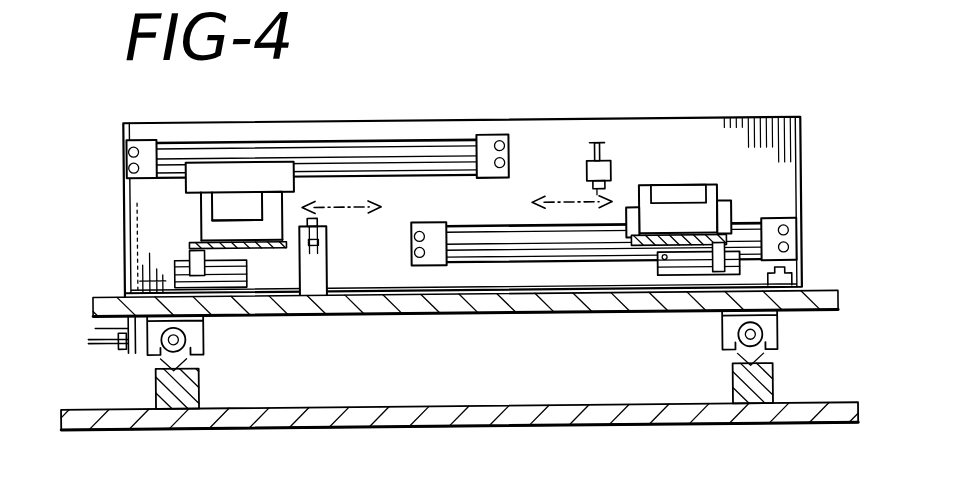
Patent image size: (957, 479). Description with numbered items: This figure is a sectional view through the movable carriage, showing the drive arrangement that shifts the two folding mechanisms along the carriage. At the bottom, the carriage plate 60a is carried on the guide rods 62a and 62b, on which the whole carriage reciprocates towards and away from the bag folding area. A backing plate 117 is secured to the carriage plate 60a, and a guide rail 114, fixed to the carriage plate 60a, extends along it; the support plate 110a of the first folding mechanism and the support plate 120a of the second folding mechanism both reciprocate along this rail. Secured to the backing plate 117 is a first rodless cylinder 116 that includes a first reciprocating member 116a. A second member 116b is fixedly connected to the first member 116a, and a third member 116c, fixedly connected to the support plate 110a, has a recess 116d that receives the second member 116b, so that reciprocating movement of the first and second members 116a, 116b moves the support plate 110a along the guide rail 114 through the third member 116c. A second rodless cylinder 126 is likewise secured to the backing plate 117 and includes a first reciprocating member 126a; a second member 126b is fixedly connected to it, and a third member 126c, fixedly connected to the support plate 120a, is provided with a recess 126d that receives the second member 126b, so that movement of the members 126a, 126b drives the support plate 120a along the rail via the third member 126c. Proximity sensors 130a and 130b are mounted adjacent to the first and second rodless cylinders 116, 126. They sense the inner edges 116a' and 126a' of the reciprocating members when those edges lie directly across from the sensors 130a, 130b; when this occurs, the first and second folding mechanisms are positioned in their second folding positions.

The carriage plate 60a is at (472, 305).
The guide rod 62a is at (198, 348).
The guide rod 62b is at (768, 338).
The support plate 110a is at (797, 258).
The guide rail 114 is at (690, 268).
The first rodless cylinder 116 is at (505, 247).
The first reciprocating member 116a is at (686, 142).
The inner edge 116a' is at (575, 156).
The second member 116b is at (722, 193).
The third member 116c is at (653, 224).
The recess 116d is at (655, 198).
The backing plate 117 is at (725, 120).
The support plate 120a is at (197, 246).
The second rodless cylinder 126 is at (343, 155).
The first reciprocating member 126a is at (251, 134).
The inner edge 126a' is at (326, 134).
The second member 126b is at (228, 198).
The third member 126c is at (204, 224).
The recess 126d is at (228, 215).
The proximity sensor 130a is at (591, 163).
The proximity sensor 130b is at (322, 220).